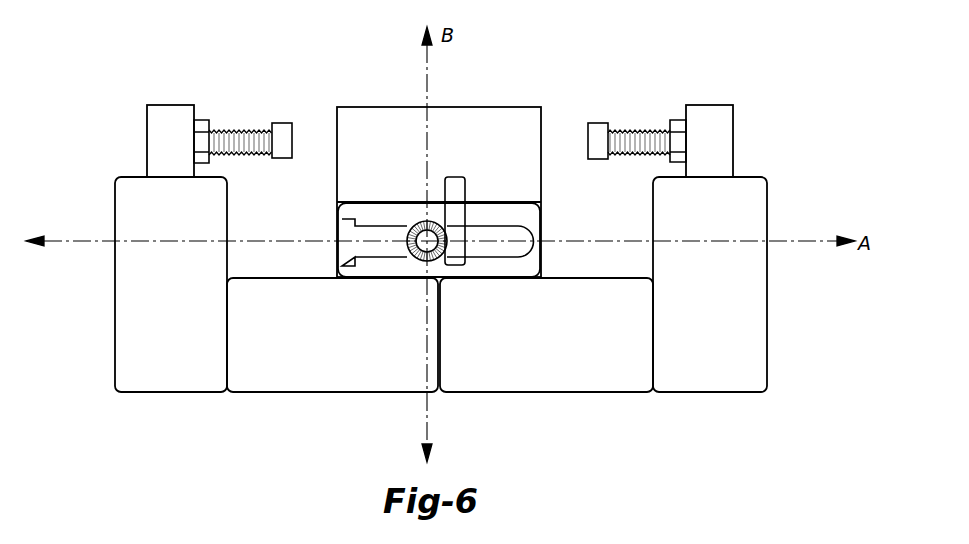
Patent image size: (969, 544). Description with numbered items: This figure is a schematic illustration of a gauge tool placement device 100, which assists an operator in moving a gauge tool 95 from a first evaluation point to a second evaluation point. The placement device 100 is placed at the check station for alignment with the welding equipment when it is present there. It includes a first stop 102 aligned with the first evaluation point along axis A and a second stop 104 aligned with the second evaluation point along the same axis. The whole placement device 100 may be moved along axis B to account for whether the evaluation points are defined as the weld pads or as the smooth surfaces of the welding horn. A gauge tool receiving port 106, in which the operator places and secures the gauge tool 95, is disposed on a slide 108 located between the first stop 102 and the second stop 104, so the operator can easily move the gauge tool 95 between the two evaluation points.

The gauge tool placement device 100 is at (737, 58).
The first stop 102 is at (282, 148).
The second stop 104 is at (598, 149).
The gauge tool 95 is at (455, 183).
The gauge tool receiving port 106 is at (443, 255).
The slide 108 is at (368, 248).